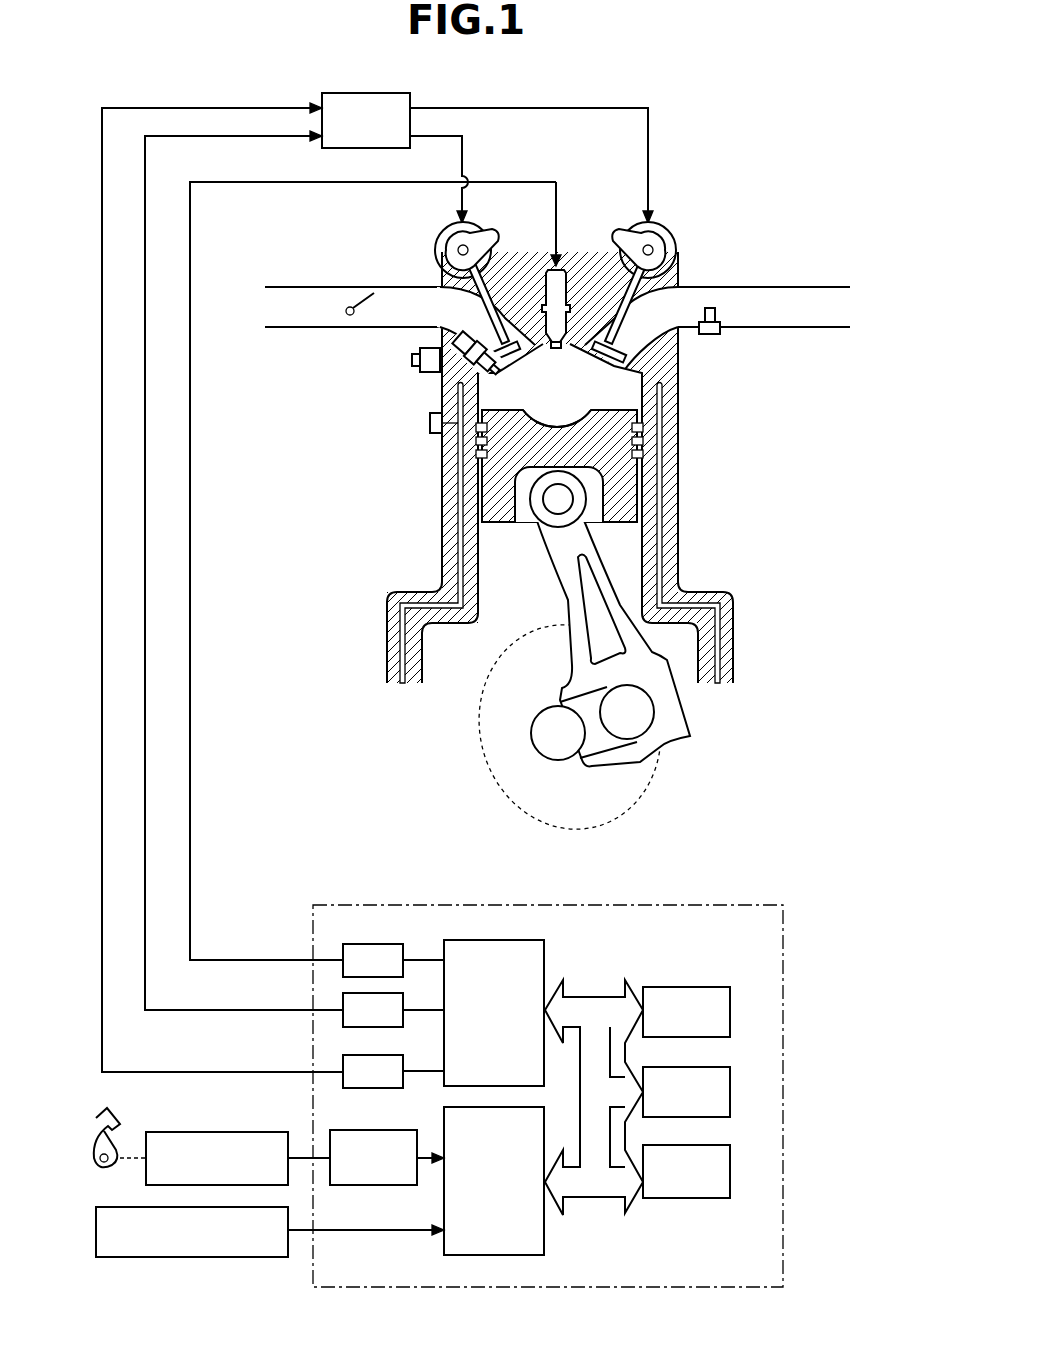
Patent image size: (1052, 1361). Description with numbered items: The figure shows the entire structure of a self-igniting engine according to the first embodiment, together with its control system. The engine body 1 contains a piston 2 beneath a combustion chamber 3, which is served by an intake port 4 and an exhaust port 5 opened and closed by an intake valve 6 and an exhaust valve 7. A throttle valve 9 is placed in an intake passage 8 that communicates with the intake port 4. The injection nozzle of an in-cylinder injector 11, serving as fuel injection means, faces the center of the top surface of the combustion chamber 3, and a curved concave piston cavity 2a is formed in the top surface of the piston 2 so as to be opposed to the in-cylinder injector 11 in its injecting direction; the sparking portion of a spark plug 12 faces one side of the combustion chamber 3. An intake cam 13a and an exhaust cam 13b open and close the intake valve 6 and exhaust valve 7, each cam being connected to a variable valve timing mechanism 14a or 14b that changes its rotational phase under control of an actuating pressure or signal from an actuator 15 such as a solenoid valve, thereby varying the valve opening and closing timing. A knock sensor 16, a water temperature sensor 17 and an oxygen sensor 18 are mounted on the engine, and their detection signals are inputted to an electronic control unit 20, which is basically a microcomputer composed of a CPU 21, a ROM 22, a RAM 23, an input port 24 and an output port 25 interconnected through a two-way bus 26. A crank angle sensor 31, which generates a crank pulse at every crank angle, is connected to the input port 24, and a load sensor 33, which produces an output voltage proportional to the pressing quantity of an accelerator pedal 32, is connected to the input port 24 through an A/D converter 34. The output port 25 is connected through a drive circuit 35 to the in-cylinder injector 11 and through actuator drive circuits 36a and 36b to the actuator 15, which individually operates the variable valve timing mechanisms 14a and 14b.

The engine body 1 is at (684, 500).
The piston 2 is at (498, 524).
The piston cavity 2a is at (545, 422).
The combustion chamber 3 is at (625, 383).
The intake port 4 is at (450, 310).
The exhaust port 5 is at (665, 305).
The intake valve 6 is at (498, 280).
The exhaust valve 7 is at (614, 272).
The intake passage 8 is at (293, 333).
The throttle valve 9 is at (350, 306).
The in-cylinder injector 11 is at (574, 262).
The spark plug 12 is at (458, 372).
The intake cam 13a is at (447, 233).
The exhaust cam 13b is at (667, 240).
The variable valve timing mechanism 14a is at (437, 252).
The variable valve timing mechanism 14b is at (662, 232).
The actuator 15 is at (400, 93).
The knock sensor 16 is at (412, 360).
The water temperature sensor 17 is at (432, 428).
The O2 sensor 18 is at (712, 336).
The electronic control unit 20 is at (797, 938).
The CPU 21 is at (705, 1145).
The ROM 22 is at (705, 987).
The RAM 23 is at (705, 1067).
The input port 24 is at (545, 1240).
The output port 25 is at (470, 940).
The two-way bus 26 is at (597, 997).
The crank angle sensor 31 is at (265, 1258).
The accelerator pedal 32 is at (113, 1123).
The load sensor 33 is at (252, 1132).
The A/D converter 34 is at (368, 1130).
The drive circuit 35 is at (380, 943).
The actuator drive circuit 36a is at (343, 996).
The actuator drive circuit 36b is at (343, 1056).